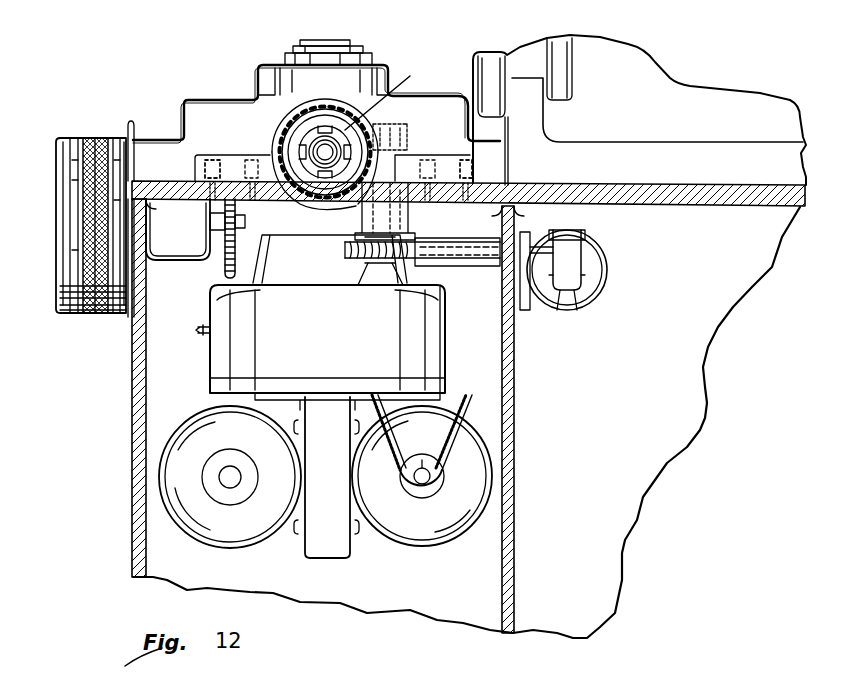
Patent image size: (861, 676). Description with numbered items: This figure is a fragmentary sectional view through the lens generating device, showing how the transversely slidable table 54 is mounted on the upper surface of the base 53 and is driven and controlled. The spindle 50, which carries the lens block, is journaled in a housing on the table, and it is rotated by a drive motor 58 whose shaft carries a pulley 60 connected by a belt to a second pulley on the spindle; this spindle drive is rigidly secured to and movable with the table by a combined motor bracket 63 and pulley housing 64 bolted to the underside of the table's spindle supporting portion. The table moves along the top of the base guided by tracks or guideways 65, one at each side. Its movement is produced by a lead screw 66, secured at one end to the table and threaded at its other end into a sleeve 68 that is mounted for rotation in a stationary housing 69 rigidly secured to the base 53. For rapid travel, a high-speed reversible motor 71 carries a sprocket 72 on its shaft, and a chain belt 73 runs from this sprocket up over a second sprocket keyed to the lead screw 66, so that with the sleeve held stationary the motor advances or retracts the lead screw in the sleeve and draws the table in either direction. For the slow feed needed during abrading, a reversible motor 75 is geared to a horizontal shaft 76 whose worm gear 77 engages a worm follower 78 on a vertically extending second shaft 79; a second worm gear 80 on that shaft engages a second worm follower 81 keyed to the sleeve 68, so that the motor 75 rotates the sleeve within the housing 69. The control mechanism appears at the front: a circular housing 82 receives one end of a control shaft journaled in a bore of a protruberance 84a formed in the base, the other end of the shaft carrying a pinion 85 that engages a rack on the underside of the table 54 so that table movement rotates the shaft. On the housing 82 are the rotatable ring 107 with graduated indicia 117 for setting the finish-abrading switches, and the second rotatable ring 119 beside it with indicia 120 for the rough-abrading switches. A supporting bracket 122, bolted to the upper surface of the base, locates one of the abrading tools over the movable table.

The spindle 50 is at (345, 40).
The base 53 is at (677, 207).
The table 54 is at (238, 90).
The drive motor 58 is at (212, 545).
The pulley 60 is at (198, 333).
The motor bracket 63 is at (328, 552).
The pulley housing 64 is at (212, 313).
The guideways 65 is at (236, 156).
The lead screw 66 is at (337, 142).
The sleeve 68 is at (322, 128).
The stationary housing 69 is at (282, 146).
The high-speed reversible motor 71 is at (420, 545).
The sprocket 72 is at (428, 488).
The chain belt 73 is at (440, 410).
The reversible motor 75 is at (590, 300).
The horizontal shaft 76 is at (540, 246).
The worm gear 77 is at (356, 260).
The worm follower 78 is at (370, 270).
The second shaft 79 is at (412, 218).
The second worm gear 80 is at (405, 140).
The second worm follower 81 is at (398, 92).
The circular housing 82 is at (125, 316).
The protruberance 84a is at (170, 258).
The pinion 85 is at (240, 268).
The ring 107 is at (95, 316).
The indicia 117 is at (78, 138).
The second rotatable ring 119 is at (104, 316).
The indicia 120 is at (131, 121).
The supporting bracket 122 is at (660, 148).